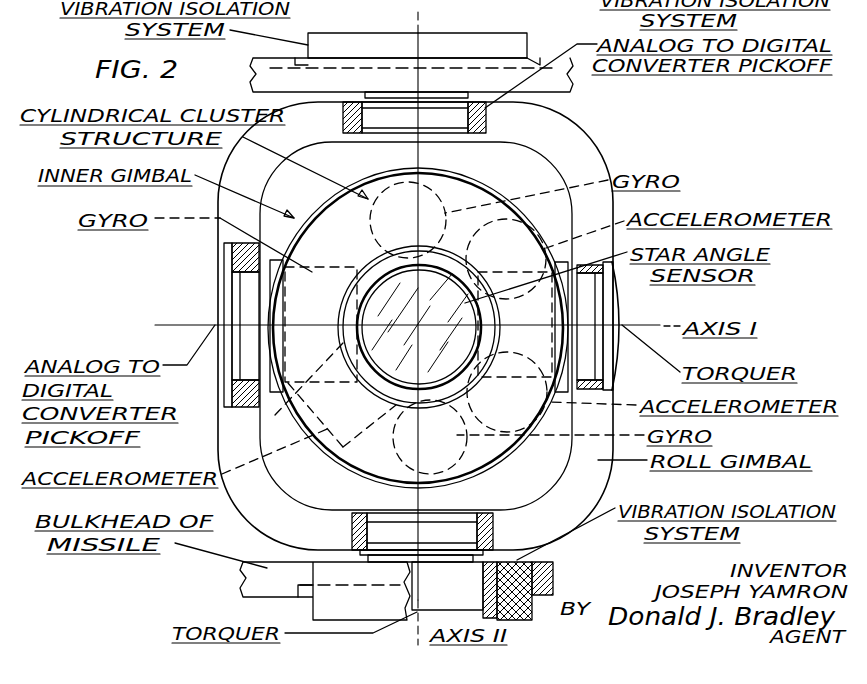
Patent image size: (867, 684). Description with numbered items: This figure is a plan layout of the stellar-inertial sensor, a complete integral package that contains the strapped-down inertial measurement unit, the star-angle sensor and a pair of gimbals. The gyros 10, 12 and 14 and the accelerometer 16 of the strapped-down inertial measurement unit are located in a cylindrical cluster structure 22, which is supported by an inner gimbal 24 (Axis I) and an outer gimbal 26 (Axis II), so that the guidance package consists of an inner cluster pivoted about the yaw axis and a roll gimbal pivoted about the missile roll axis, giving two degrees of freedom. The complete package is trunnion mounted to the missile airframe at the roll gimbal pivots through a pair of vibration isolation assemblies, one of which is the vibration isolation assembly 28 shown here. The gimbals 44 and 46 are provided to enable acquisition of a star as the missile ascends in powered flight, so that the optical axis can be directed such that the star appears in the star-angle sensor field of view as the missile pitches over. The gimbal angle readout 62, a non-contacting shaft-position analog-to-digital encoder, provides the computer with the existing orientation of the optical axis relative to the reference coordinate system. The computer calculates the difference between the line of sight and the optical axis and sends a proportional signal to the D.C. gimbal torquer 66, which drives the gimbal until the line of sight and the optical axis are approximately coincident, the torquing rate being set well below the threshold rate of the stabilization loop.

The gyro 10 is at (372, 222).
The gyro 12 is at (328, 250).
The gyro 14 is at (453, 460).
The accelerometer 16 is at (518, 237).
The cylindrical cluster structure 22 is at (377, 190).
The inner gimbal 24 is at (648, 325).
The outer gimbal 26 is at (436, 622).
The vibration isolation assembly 28 is at (540, 561).
The gimbal 44 is at (593, 483).
The gimbal 46 is at (327, 198).
The gimbal angle readout 62 is at (485, 122).
The gimbal torquer 66 is at (619, 347).